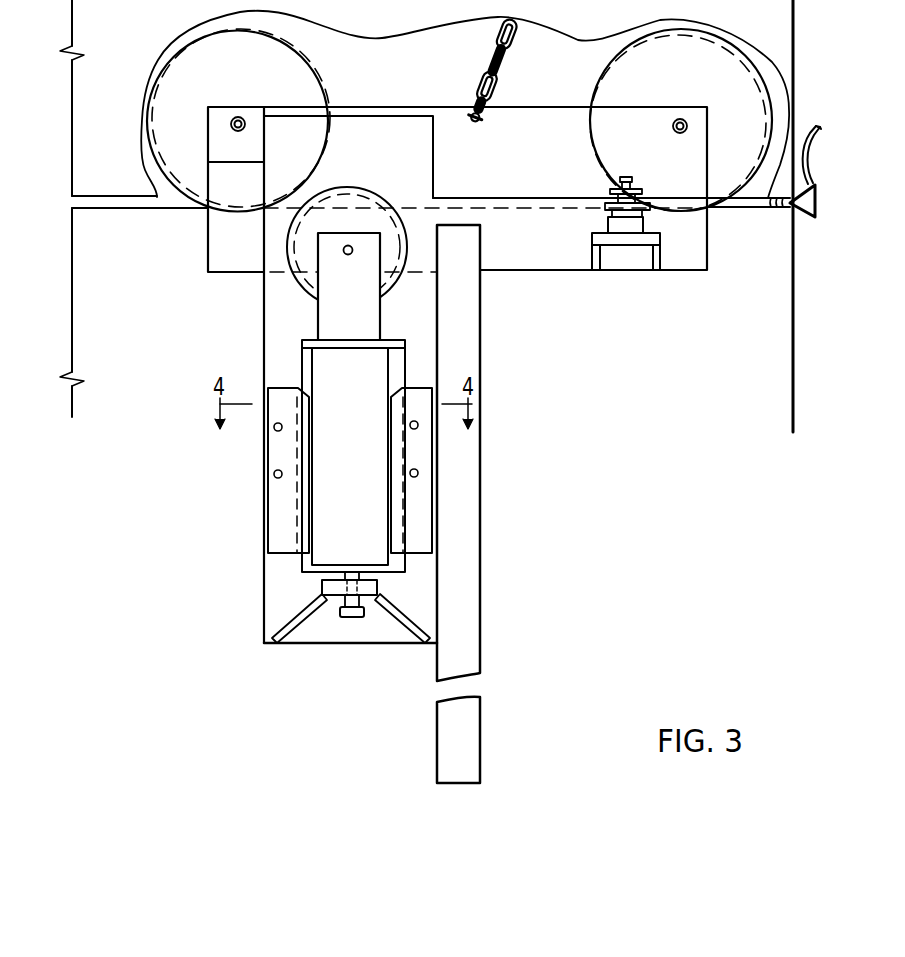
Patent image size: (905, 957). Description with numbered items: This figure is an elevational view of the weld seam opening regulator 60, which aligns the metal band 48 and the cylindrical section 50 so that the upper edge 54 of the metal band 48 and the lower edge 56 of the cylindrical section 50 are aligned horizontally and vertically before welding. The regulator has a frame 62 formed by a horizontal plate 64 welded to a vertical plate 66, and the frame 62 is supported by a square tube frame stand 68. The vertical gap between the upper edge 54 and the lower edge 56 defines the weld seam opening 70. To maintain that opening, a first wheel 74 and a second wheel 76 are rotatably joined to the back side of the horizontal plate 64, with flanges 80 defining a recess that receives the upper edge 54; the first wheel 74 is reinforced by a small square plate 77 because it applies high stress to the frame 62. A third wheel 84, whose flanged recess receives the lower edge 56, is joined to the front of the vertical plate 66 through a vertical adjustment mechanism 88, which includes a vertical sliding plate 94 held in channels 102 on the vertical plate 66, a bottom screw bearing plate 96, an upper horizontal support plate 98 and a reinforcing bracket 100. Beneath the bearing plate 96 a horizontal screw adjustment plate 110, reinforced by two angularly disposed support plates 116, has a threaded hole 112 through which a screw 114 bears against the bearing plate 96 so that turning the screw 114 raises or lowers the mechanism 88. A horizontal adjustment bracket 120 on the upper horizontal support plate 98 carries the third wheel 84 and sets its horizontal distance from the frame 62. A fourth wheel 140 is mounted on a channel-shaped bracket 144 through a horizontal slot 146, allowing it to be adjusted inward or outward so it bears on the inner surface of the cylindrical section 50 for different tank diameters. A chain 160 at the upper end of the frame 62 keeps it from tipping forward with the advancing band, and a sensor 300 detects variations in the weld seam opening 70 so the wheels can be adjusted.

The metal band 48 is at (165, 329).
The cylindrical section 50 is at (110, 107).
The upper edge 54 is at (161, 209).
The lower edge 56 is at (116, 195).
The weld seam opening regulator 60 is at (521, 295).
The frame 62 is at (234, 279).
The horizontal plate 64 is at (542, 167).
The vertical plate 66 is at (408, 167).
The square tube frame stand 68 is at (470, 500).
The weld seam opening 70 is at (748, 208).
The first wheel 74 is at (253, 89).
The second wheel 76 is at (685, 89).
The small square plate 77 is at (236, 189).
The flanges 80 is at (316, 72).
The third wheel 84 is at (362, 232).
The vertical adjustment mechanism 88 is at (297, 580).
The vertical sliding plate 94 is at (305, 566).
The bottom screw bearing plate 96 is at (372, 574).
The upper horizontal support plate 98 is at (368, 344).
The reinforcing bracket 100 is at (367, 358).
The channels 102 is at (420, 453).
The horizontal screw adjustment plate 110 is at (333, 596).
The threaded hole 112 is at (368, 605).
The screw 114 is at (349, 620).
The support plates 116 is at (289, 634).
The horizontal adjustment bracket 120 is at (368, 319).
The fourth wheel 140 is at (634, 222).
The channel-shaped bracket 144 is at (657, 266).
The horizontal slot 146 is at (625, 240).
The chain 160 is at (500, 72).
The sensor 300 is at (803, 216).